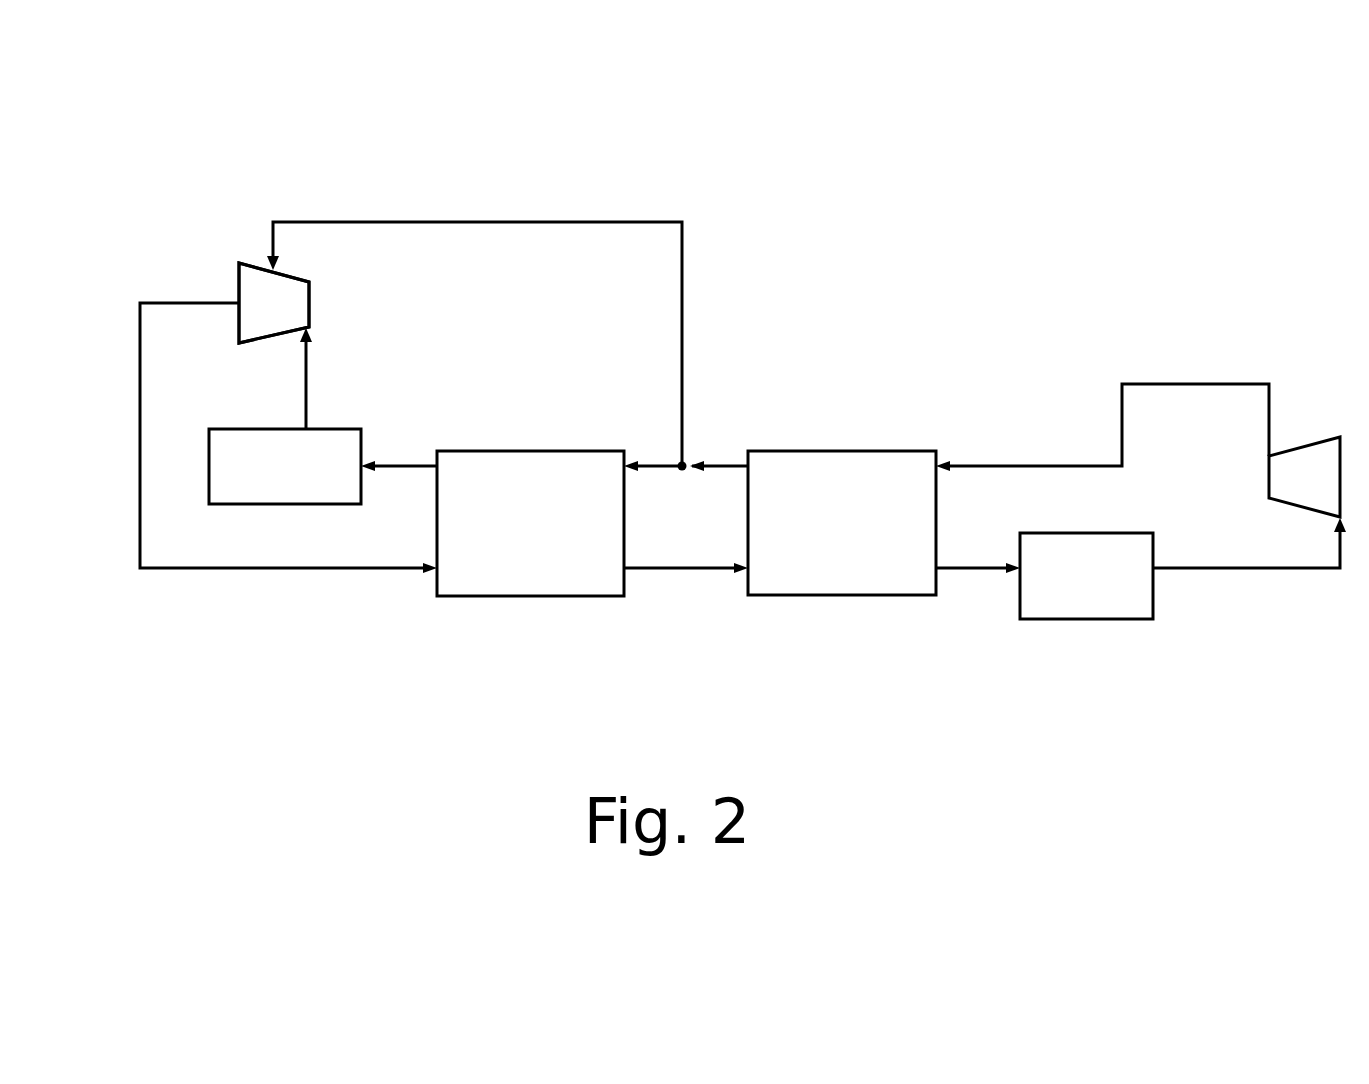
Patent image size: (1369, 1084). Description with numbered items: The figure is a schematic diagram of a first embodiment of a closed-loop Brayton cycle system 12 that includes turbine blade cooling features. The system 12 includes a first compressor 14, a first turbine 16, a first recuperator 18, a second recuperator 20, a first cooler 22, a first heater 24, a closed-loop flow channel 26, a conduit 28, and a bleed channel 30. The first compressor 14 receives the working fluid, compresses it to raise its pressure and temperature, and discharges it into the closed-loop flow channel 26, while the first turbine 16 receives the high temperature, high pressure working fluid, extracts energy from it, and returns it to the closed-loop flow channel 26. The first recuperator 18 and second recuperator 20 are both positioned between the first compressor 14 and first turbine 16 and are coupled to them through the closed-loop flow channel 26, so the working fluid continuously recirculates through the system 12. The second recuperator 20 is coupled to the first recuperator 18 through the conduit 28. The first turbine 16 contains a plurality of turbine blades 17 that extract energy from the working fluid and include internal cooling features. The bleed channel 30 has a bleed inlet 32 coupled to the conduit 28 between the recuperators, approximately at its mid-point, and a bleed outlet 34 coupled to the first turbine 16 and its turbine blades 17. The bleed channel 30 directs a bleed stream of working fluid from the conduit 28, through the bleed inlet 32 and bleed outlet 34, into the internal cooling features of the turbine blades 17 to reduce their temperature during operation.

The closed-loop Brayton cycle system 12 is at (1023, 221).
The first compressor 14 is at (1317, 455).
The first turbine 16 is at (226, 277).
The turbine blades 17 is at (288, 285).
The first recuperator 18 is at (508, 584).
The second recuperator 20 is at (831, 577).
The first cooler 22 is at (1092, 610).
The first heater 24 is at (263, 505).
The closed-loop flow channel 26 is at (139, 409).
The conduit 28 is at (723, 462).
The bleed channel 30 is at (682, 263).
The bleed inlet 32 is at (674, 453).
The bleed outlet 34 is at (266, 262).